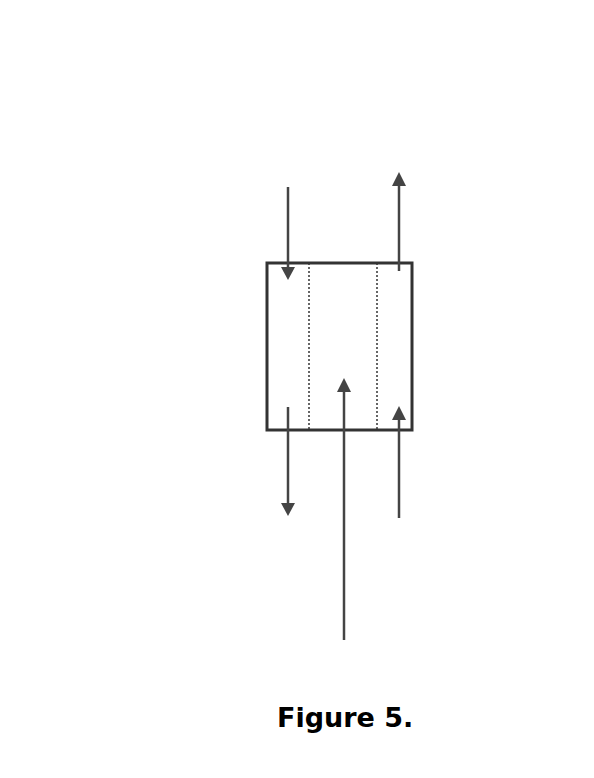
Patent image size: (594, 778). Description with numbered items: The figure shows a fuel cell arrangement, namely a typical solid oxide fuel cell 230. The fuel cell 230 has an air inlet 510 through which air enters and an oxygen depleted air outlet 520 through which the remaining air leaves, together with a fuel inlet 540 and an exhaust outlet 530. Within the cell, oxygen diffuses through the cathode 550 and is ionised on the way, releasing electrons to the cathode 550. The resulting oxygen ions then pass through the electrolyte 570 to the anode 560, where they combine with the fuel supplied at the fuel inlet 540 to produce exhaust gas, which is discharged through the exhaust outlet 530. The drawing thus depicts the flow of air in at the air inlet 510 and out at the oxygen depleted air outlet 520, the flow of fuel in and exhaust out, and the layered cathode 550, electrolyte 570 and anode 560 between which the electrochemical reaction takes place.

The fuel cell 230 is at (153, 118).
The air inlet 510 is at (284, 209).
The oxygen depleted air outlet 520 is at (404, 204).
The exhaust outlet 530 is at (284, 480).
The fuel inlet 540 is at (400, 480).
The cathode 550 is at (378, 353).
The anode 560 is at (312, 360).
The electrolyte 570 is at (344, 530).